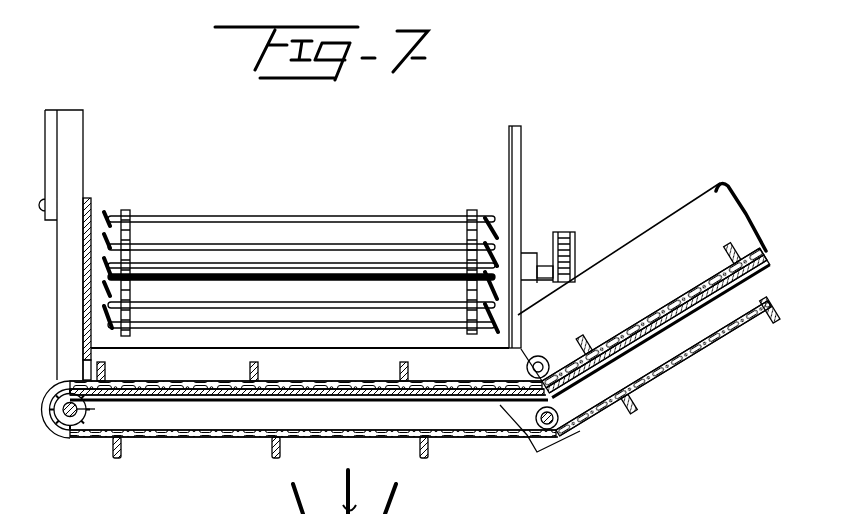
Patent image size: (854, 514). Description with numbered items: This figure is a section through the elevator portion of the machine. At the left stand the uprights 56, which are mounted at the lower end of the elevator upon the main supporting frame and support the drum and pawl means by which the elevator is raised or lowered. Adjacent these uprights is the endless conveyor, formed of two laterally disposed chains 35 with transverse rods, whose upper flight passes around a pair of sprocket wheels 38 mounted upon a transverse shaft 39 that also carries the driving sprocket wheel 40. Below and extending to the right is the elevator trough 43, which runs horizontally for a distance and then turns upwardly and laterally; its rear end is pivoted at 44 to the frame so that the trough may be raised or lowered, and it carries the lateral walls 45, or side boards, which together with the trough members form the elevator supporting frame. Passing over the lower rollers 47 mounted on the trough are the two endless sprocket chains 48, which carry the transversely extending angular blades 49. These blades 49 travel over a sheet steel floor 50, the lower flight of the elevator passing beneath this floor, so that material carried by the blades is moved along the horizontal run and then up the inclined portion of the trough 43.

The chains 35 is at (488, 216).
The sprocket wheels 38 is at (133, 234).
The transverse shaft 39 is at (263, 265).
The driving sprocket wheel 40 is at (568, 232).
The trough 43 is at (693, 214).
The pivot 44 is at (62, 437).
The lateral walls 45 is at (633, 253).
The lower rollers 47 is at (78, 436).
The endless sprocket chains 48 is at (655, 400).
The angular blades 49 is at (587, 345).
The sheet steel floor 50 is at (420, 376).
The uprights 56 is at (78, 157).